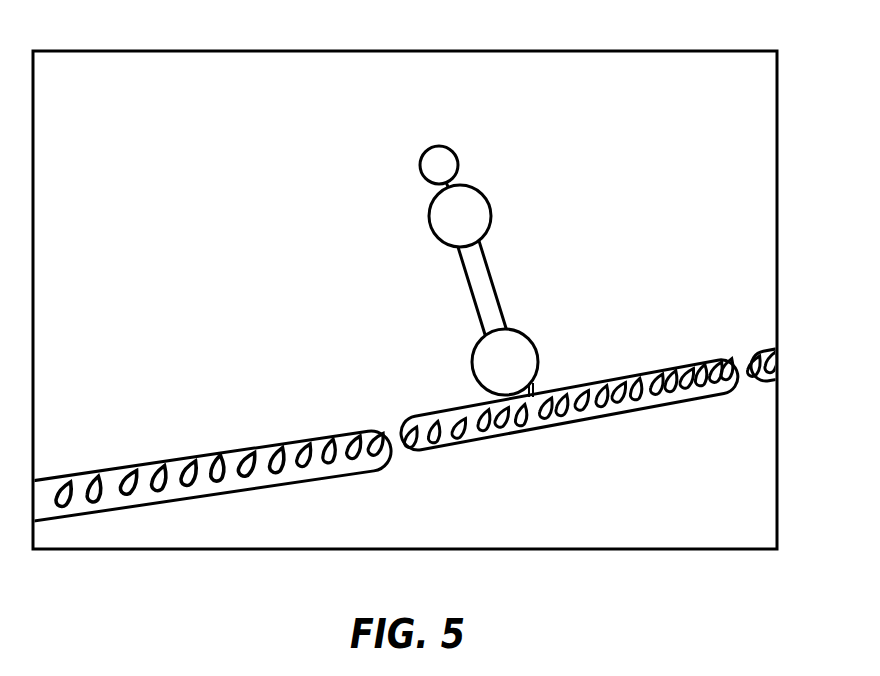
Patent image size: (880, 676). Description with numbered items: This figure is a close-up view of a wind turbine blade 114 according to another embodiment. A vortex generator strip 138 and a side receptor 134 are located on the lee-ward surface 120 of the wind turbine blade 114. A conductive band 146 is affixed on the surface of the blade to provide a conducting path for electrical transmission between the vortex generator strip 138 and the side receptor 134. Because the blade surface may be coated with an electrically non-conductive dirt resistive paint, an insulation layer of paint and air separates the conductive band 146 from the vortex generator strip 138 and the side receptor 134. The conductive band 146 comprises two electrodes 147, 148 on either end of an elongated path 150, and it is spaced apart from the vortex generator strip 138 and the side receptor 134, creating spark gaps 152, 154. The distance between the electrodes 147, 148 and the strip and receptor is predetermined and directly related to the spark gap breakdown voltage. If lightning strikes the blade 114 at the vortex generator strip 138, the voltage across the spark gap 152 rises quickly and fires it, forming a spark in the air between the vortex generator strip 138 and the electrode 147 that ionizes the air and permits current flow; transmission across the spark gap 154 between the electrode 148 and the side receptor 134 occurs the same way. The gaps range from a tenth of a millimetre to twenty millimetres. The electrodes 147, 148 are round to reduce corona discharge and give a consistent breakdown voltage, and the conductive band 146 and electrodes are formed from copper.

The lee-ward surface 120 is at (585, 57).
The wind turbine blade 114 is at (715, 140).
The side receptor 134 is at (440, 146).
The vortex generator strip 138 is at (652, 368).
The conductive band 146 is at (486, 248).
The electrode 147 is at (527, 336).
The electrode 148 is at (428, 223).
The elongated path 150 is at (488, 268).
The spark gap 152 is at (535, 389).
The spark gap 154 is at (461, 181).